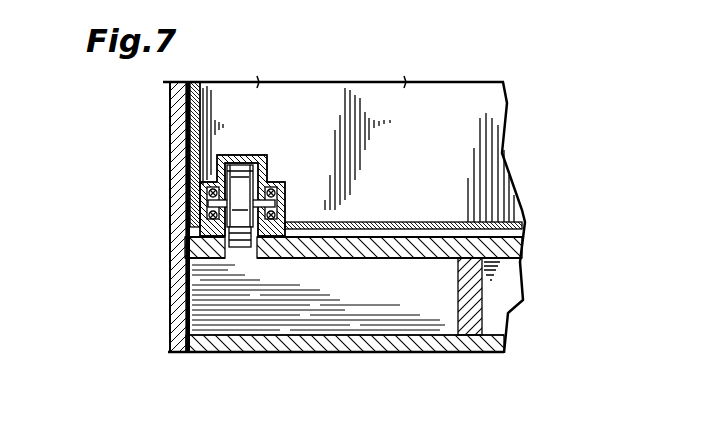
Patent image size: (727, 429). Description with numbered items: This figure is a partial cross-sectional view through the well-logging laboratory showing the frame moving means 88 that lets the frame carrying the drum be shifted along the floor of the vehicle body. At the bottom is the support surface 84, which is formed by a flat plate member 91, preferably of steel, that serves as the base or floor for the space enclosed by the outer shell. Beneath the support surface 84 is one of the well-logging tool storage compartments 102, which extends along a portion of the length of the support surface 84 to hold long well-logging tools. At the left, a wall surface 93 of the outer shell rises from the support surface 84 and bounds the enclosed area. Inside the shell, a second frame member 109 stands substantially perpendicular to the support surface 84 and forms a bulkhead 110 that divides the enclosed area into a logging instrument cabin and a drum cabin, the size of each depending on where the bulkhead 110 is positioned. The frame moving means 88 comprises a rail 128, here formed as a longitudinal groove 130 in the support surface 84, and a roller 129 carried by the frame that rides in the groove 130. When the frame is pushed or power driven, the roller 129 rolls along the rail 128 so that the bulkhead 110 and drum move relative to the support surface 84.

The support surface 84 is at (520, 247).
The means for moving 88 is at (166, 204).
The plate member 91 is at (490, 232).
The wall surface 93 is at (176, 106).
The well-logging tool storage compartment 102 is at (506, 318).
The second frame member 109 is at (228, 121).
The bulkhead 110 is at (205, 157).
The rail 128 is at (232, 266).
The roller 129 is at (238, 261).
The longitudinal groove 130 is at (238, 228).